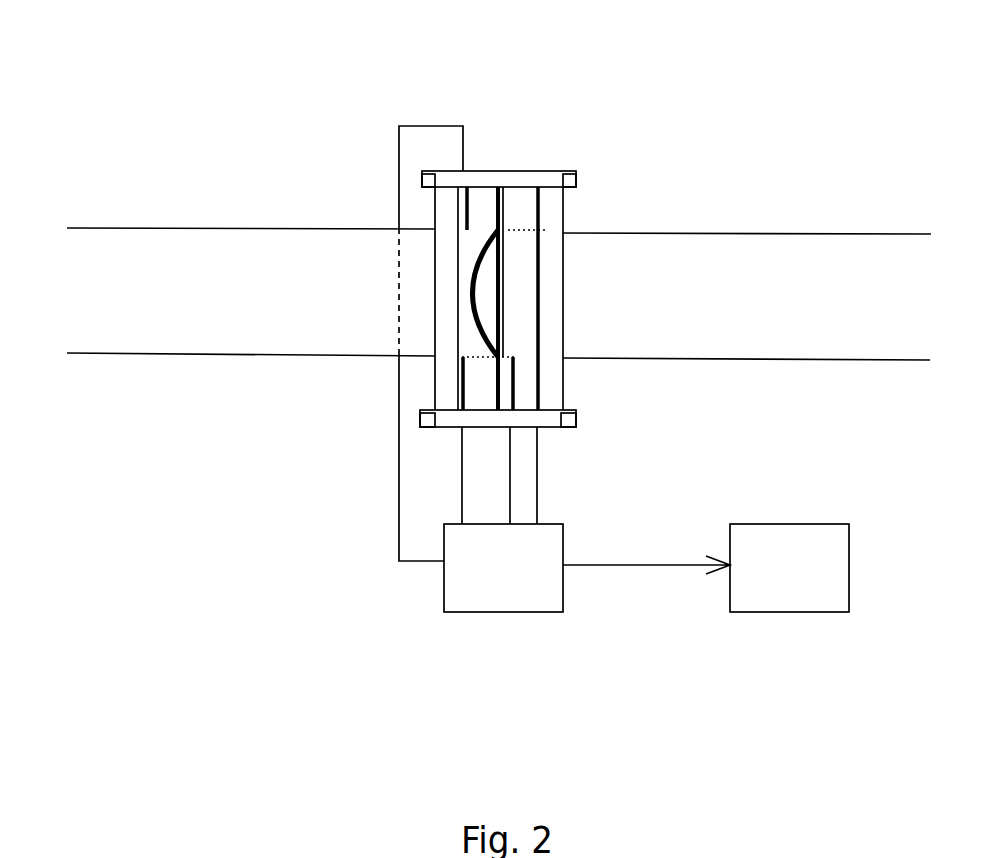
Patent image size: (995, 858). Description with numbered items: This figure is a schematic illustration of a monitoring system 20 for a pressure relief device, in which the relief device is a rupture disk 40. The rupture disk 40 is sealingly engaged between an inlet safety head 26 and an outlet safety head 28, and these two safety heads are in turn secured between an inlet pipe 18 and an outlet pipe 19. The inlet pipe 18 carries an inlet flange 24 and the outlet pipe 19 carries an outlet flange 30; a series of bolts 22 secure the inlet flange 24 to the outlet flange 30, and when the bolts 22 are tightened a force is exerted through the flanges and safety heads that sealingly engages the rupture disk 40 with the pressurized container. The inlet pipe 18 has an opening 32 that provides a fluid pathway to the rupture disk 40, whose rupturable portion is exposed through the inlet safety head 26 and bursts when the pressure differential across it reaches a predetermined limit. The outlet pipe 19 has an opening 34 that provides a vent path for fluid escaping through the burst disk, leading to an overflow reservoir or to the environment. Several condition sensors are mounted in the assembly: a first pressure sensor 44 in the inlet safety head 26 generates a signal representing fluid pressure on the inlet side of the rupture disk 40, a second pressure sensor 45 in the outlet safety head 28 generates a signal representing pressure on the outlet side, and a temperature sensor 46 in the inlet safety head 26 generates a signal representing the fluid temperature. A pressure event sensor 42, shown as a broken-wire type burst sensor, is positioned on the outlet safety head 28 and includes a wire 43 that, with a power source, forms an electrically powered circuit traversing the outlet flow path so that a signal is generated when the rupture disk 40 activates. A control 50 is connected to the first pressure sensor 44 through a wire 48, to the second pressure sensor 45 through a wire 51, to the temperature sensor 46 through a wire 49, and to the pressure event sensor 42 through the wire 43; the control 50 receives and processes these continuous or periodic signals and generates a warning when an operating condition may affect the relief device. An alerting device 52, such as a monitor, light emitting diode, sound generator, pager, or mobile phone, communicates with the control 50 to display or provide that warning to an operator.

The inlet pipe 18 is at (226, 228).
The outlet pipe 19 is at (802, 234).
The flow meter assembly 20 is at (248, 534).
The bolts 22 is at (427, 187).
The inlet flange 24 is at (443, 190).
The inlet safety head 26 is at (492, 172).
The outlet safety head 28 is at (533, 200).
The outlet flange 30 is at (553, 210).
The opening 32 is at (183, 310).
The opening 34 is at (780, 318).
The rupture disk 40 is at (475, 270).
The pressure event sensor 42 is at (540, 283).
The wire 43 is at (537, 470).
The first pressure sensor 44 is at (460, 389).
The second pressure sensor 45 is at (513, 397).
The temperature sensor 46 is at (468, 170).
The wire 48 is at (462, 470).
The wire 49 is at (415, 126).
The control 50 is at (505, 612).
The wire 51 is at (510, 508).
The alerting device 52 is at (790, 612).